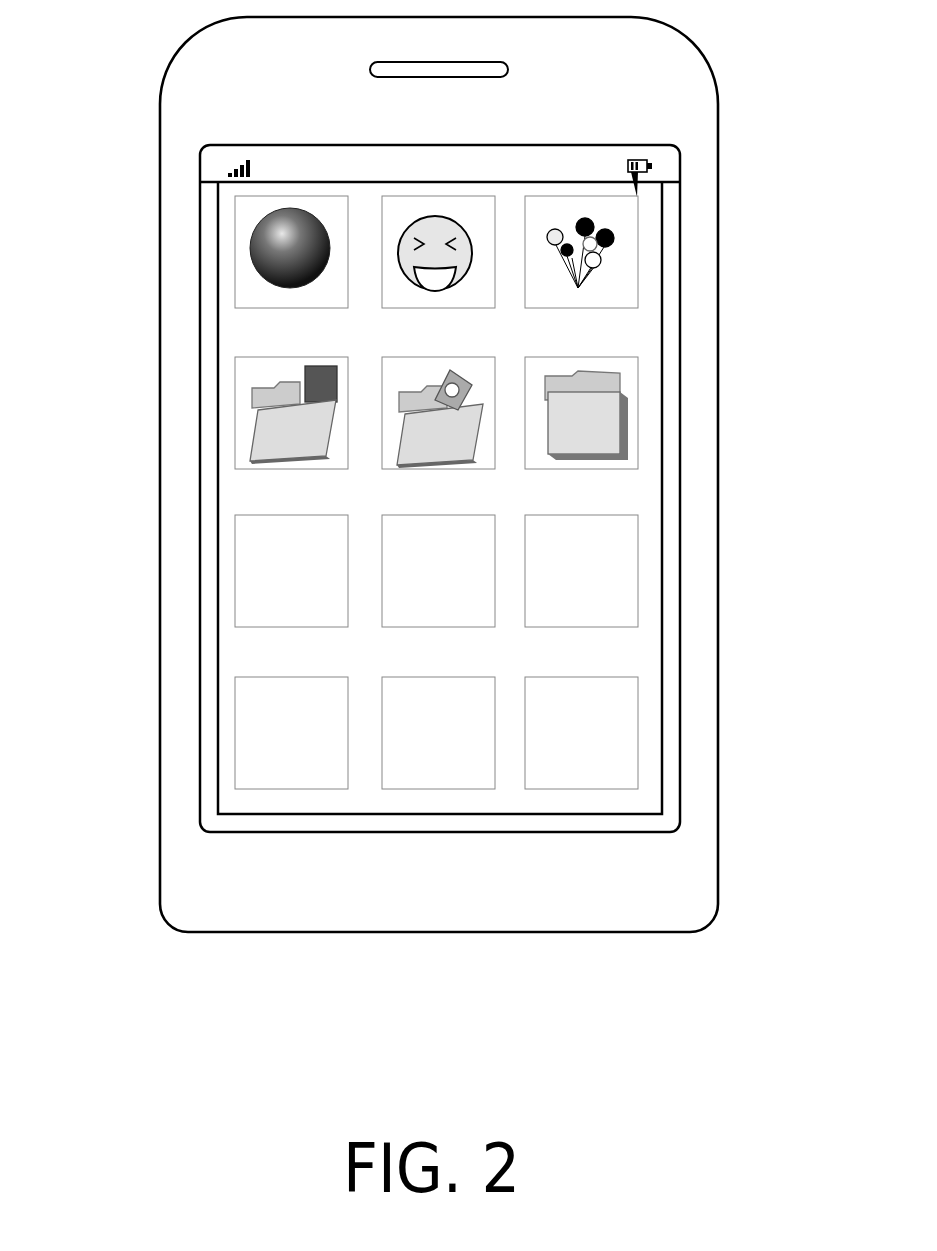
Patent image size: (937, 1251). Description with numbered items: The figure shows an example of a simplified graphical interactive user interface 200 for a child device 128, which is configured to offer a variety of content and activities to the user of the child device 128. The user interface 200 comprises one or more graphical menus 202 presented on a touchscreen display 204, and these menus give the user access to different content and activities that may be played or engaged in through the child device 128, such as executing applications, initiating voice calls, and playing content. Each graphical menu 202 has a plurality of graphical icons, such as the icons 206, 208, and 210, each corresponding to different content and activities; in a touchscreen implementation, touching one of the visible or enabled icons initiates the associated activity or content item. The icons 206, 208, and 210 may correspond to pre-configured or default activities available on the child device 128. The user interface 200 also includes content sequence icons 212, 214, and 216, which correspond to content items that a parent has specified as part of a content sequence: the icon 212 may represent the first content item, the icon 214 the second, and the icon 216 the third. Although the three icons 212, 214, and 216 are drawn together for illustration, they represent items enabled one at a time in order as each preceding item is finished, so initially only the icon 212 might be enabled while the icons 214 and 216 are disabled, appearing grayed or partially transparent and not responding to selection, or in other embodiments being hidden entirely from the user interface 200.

The child device 128 is at (172, 51).
The graphical interactive user interface 200 is at (132, 158).
The graphical menu 202 is at (650, 509).
The touchscreen display 204 is at (667, 136).
The icon 206 is at (285, 308).
The icon 208 is at (437, 308).
The icon 210 is at (548, 308).
The content sequence icon 212 is at (260, 468).
The content sequence icon 214 is at (413, 468).
The content sequence icon 216 is at (562, 468).